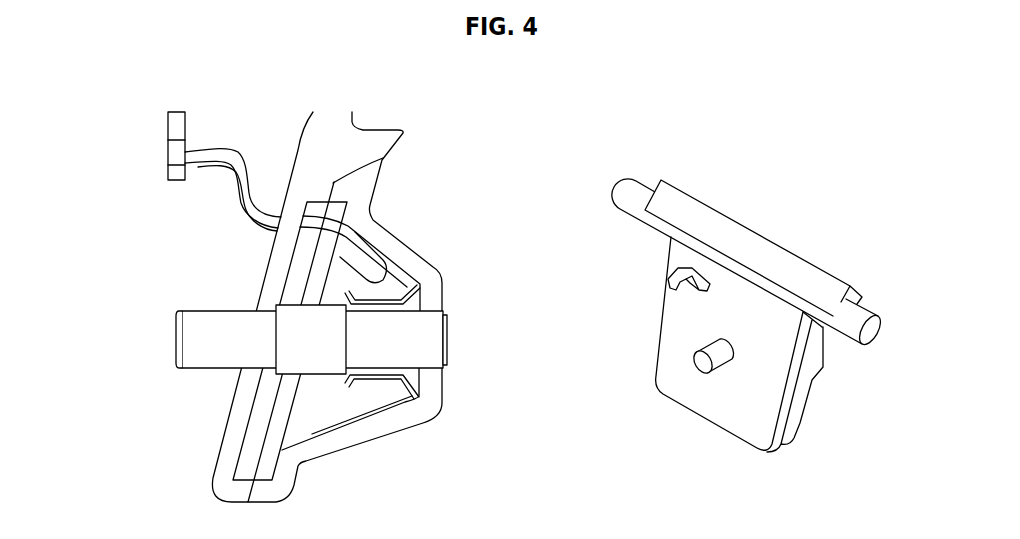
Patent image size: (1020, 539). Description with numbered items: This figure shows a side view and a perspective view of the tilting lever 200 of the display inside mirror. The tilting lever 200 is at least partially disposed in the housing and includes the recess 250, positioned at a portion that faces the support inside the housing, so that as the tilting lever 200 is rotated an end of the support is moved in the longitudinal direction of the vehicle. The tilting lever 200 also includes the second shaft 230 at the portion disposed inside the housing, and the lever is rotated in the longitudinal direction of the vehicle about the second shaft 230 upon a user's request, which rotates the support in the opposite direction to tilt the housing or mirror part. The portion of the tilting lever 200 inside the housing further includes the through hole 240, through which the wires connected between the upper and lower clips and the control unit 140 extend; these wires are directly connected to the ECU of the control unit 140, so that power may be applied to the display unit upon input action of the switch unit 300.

The control unit 140 is at (173, 130).
The tilting lever 200 is at (294, 104).
The second shaft 230 is at (868, 332).
The through hole 240 is at (675, 332).
The recess 250 is at (797, 273).
The switch unit 300 is at (205, 322).